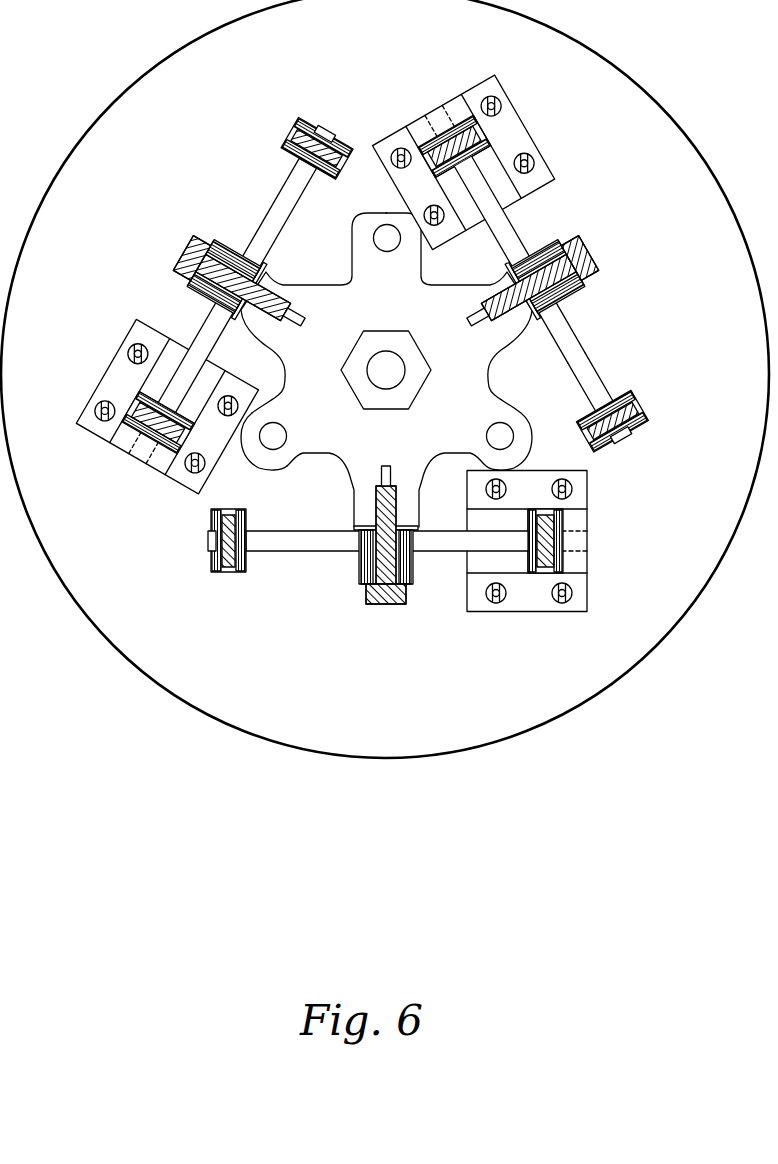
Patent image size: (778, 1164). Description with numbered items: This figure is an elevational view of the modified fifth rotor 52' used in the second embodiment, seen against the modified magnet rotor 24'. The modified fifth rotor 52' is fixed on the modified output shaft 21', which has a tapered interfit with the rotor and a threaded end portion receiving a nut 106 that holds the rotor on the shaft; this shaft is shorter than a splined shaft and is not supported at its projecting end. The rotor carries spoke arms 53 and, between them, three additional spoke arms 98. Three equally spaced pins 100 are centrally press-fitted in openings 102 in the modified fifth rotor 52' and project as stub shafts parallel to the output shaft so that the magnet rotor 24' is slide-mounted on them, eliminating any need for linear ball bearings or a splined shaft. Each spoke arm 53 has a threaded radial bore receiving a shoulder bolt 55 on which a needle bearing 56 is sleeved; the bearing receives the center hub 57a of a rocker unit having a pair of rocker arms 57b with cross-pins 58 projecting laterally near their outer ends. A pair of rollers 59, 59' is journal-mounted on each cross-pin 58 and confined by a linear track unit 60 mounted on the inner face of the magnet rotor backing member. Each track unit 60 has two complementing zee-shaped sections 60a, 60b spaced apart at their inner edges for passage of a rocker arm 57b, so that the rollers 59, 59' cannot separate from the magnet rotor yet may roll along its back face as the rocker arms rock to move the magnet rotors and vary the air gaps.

The modified magnet rotor 24' is at (385, 379).
The spoke arms 98 is at (282, 464).
The pins 100 is at (278, 437).
The openings 102 is at (268, 426).
The nut 106 is at (388, 340).
The modified output shaft 21' is at (421, 361).
The modified fifth rotor 52' is at (537, 340).
The spoke arms 53 is at (270, 272).
The shoulder bolts 55 is at (592, 253).
The needle bearings 56 is at (587, 292).
The center hubs 57a is at (576, 303).
The rocker arms 57b is at (600, 380).
The cross-pins 58 is at (295, 134).
The roller 59 is at (640, 429).
The roller 59' is at (633, 462).
The linear track units 60 is at (426, 104).
The track unit section 60a is at (527, 127).
The track unit section 60b is at (410, 187).